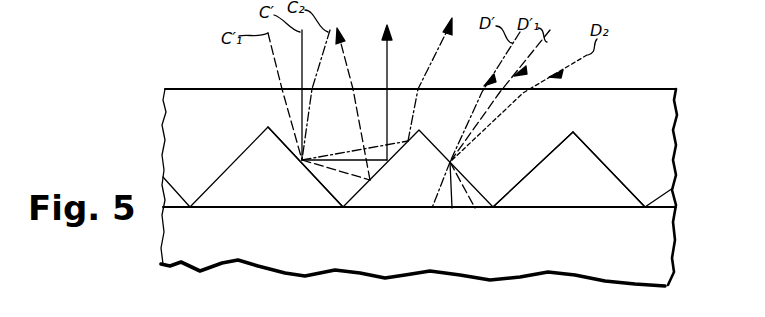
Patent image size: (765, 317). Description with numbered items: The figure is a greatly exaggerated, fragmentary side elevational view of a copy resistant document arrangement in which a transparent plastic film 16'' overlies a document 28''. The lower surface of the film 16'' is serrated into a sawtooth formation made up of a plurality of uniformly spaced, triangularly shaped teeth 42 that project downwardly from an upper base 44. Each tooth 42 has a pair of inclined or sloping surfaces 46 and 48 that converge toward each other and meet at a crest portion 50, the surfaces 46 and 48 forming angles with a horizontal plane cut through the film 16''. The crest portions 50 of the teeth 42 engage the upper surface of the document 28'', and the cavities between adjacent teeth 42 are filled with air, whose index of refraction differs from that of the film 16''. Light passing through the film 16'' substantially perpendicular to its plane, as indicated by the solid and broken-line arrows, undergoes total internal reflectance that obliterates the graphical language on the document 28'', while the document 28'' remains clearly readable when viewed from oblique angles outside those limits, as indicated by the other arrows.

The transparent plastic film 16'' is at (384, 187).
The document 28'' is at (390, 243).
The triangularly shaped teeth 42 is at (188, 153).
The upper base 44 is at (186, 98).
The inclined surface 46 is at (253, 142).
The inclined surface 48 is at (323, 182).
The crest portion 50 is at (190, 208).